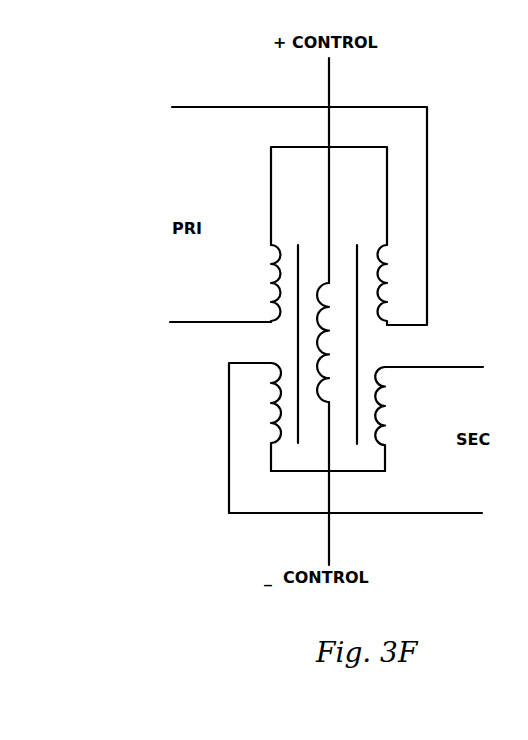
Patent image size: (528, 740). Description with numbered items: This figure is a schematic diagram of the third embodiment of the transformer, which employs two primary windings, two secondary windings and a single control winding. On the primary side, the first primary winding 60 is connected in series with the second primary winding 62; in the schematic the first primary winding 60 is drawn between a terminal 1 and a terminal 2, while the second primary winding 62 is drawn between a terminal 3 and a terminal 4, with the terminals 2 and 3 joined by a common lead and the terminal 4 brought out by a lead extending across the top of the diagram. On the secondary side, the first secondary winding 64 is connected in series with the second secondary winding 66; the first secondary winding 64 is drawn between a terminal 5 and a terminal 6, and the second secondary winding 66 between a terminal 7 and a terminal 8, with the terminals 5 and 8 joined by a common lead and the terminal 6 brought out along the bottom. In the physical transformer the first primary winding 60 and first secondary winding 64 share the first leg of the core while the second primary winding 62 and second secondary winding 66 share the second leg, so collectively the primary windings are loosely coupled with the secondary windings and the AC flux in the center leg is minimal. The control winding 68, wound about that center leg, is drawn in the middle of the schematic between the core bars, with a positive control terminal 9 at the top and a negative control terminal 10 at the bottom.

The primary winding terminal 1 is at (210, 324).
The primary winding terminal 2 is at (290, 193).
The secondary winding terminal 3 is at (367, 193).
The terminal 4 connecting lead 4 is at (289, 211).
The primary winding terminal 5 is at (250, 438).
The terminal 6 connecting lead 6 is at (365, 516).
The secondary winding terminal 7 is at (444, 367).
The secondary winding terminal 8 is at (337, 480).
The positive control terminal 9 is at (319, 170).
The negative control terminal 10 is at (313, 484).
The first primary winding 60 is at (276, 297).
The second primary winding 62 is at (378, 274).
The first secondary winding 64 is at (270, 409).
The second secondary winding 66 is at (380, 392).
The control winding 68 is at (331, 167).